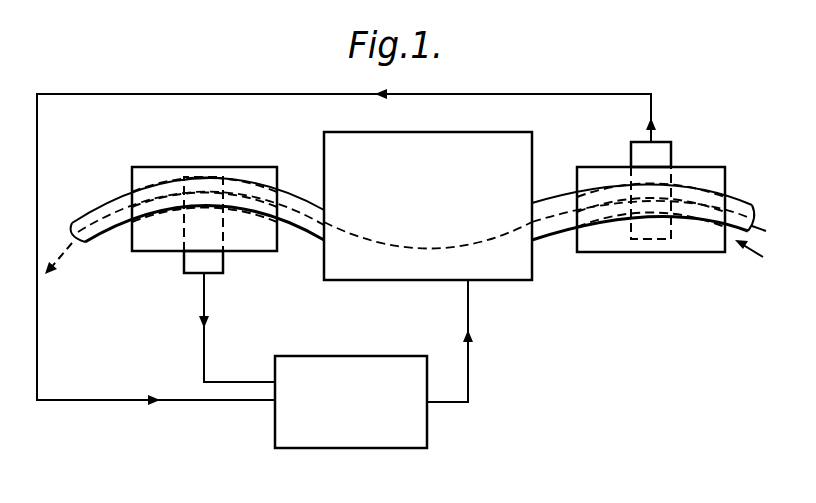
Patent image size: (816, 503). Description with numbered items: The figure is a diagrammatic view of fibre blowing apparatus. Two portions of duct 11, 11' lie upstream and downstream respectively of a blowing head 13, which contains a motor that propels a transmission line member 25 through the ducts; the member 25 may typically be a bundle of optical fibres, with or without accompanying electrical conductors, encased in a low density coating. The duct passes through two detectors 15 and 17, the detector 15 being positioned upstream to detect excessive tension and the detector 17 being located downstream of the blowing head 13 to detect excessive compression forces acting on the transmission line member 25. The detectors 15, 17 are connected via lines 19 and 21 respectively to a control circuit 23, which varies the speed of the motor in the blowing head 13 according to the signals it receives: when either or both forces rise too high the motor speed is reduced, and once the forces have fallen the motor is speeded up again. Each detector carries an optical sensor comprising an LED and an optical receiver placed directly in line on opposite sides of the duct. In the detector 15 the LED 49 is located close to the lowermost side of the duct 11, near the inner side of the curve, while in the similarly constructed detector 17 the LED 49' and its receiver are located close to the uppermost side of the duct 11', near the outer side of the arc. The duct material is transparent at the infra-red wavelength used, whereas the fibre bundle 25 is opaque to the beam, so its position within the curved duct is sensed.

The duct portion 11 is at (547, 204).
The duct portion 11' is at (197, 186).
The blowing head 13 is at (355, 281).
The detector 15 is at (609, 254).
The detector 17 is at (146, 253).
The line 19 is at (300, 93).
The line 21 is at (204, 357).
The control circuit 23 is at (406, 448).
The transmission line member 25 is at (760, 222).
The LED 49 is at (662, 234).
The LED 49' is at (216, 183).